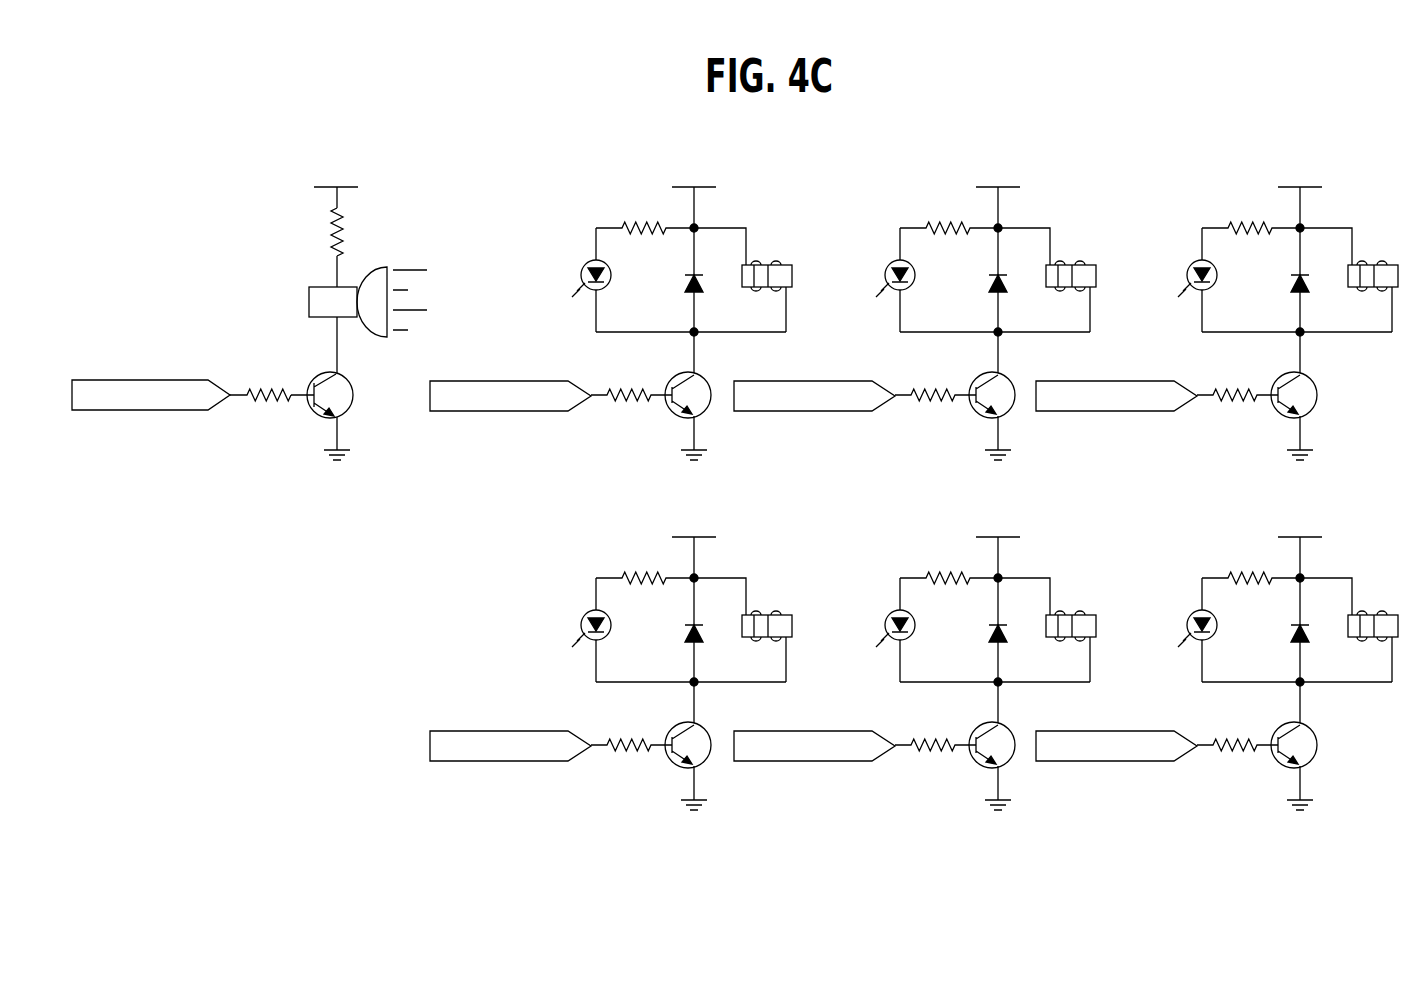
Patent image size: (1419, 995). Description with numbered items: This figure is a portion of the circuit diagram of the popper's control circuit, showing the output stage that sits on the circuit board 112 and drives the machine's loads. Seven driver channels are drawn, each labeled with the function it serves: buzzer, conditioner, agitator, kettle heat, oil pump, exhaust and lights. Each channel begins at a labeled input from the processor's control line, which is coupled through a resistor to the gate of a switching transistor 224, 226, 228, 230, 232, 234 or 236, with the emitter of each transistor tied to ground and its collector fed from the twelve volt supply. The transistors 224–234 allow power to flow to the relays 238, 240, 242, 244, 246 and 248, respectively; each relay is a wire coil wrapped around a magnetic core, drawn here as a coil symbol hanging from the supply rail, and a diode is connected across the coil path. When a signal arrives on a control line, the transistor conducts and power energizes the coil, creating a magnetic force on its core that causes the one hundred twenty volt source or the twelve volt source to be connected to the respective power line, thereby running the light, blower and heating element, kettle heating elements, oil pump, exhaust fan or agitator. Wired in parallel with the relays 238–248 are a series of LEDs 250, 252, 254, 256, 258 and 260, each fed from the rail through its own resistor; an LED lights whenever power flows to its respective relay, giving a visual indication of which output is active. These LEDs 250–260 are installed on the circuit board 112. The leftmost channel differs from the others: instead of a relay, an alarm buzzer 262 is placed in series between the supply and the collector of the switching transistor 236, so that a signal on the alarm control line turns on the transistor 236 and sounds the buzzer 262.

The circuit board 112 is at (930, 152).
The switching transistor 224 is at (1278, 748).
The switching transistor 226 is at (672, 398).
The switching transistor 228 is at (1278, 398).
The switching transistor 230 is at (672, 748).
The switching transistor 232 is at (976, 748).
The switching transistor 234 is at (976, 398).
The switching transistor 236 is at (307, 412).
The relay 238 is at (1349, 613).
The relay 240 is at (743, 263).
The relay 242 is at (1349, 263).
The relay 244 is at (743, 613).
The relay 246 is at (1047, 613).
The relay 248 is at (1047, 263).
The LED 250 is at (1173, 629).
The LED 252 is at (567, 279).
The LED 254 is at (1173, 279).
The LED 256 is at (567, 629).
The LED 258 is at (871, 629).
The LED 260 is at (871, 279).
The alarm buzzer 262 is at (390, 267).